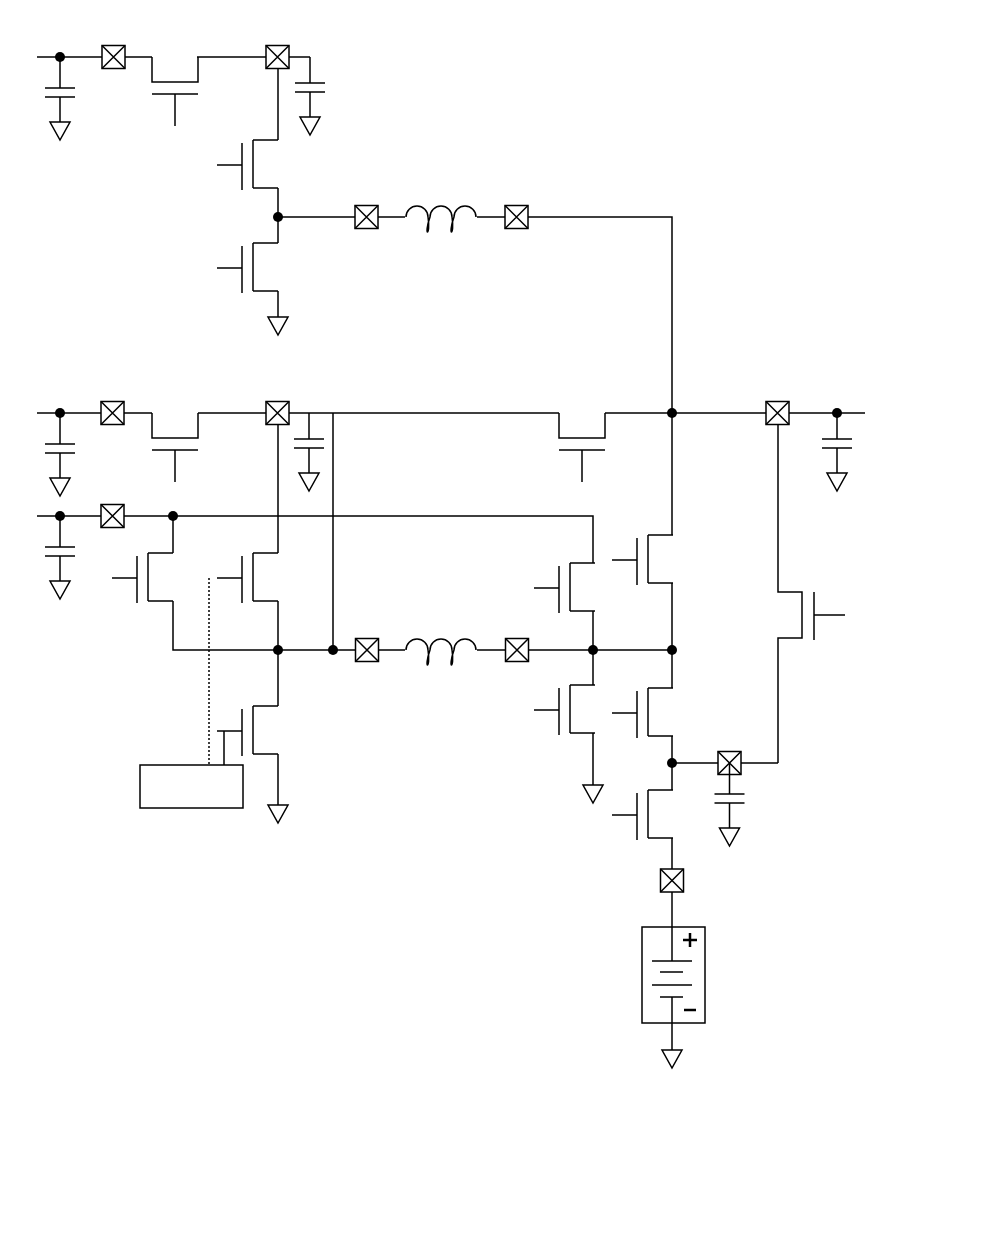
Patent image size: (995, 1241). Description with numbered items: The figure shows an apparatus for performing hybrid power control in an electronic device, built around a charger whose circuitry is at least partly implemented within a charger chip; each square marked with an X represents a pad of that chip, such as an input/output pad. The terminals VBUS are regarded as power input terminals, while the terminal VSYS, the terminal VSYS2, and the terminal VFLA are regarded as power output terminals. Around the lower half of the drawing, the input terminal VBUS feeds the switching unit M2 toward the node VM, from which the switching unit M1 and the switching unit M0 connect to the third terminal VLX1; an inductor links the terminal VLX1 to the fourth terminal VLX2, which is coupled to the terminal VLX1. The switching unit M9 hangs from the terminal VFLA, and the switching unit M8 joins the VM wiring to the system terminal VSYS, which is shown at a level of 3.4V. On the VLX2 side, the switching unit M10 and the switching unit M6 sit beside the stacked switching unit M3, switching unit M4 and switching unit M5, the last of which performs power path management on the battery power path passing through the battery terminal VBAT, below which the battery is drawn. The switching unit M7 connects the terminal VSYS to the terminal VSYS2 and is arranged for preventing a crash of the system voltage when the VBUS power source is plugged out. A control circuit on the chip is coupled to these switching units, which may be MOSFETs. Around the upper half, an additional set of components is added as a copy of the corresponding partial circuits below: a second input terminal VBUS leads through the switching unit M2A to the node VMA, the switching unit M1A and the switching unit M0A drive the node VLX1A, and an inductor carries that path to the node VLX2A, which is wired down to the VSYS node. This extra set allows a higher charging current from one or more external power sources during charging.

The terminal VBUS is at (91, 254).
The switching unit M2A is at (195, 75).
The terminal VMA is at (286, 74).
The switching unit M1A is at (270, 145).
The switching unit M0A is at (270, 276).
The switching node VLX1A is at (341, 234).
The switching node VLX2A is at (574, 294).
The switching unit M2 is at (195, 439).
The intermediate voltage node VM is at (294, 430).
The switching unit M8 is at (505, 440).
The terminal VSYS is at (768, 399).
The system voltage level 3.4V is at (842, 435).
The terminal VFLA is at (315, 537).
The switching unit M9 is at (195, 583).
The switching unit M1 is at (257, 594).
The switching unit M0 is at (260, 736).
The terminal VLX1 is at (341, 553).
The terminal VLX2 is at (577, 635).
The switching unit M10 is at (564, 594).
The switching unit M3 is at (655, 531).
The switching unit M6 is at (568, 726).
The switching unit M4 is at (656, 709).
The switching unit M7 is at (798, 593).
The terminal VSYS2 is at (725, 785).
The switching unit M5 is at (656, 816).
The terminal VBAT is at (639, 913).